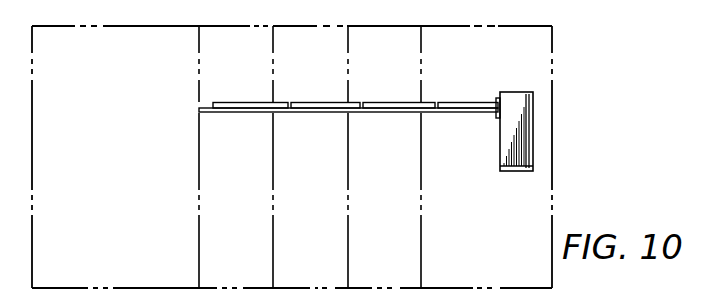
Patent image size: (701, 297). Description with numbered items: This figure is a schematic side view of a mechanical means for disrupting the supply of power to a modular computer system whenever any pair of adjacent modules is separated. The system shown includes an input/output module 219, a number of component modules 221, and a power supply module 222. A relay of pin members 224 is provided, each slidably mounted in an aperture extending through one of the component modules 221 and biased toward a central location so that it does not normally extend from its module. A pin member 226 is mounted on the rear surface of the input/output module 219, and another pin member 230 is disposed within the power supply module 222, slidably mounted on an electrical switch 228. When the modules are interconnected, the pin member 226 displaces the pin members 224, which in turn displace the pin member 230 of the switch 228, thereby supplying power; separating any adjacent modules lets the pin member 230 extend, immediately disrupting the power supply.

The input/output module 219 is at (96, 263).
The component modules 221 is at (217, 264).
The power supply module 222 is at (463, 264).
The pin members 224 is at (372, 102).
The pin member 226 is at (205, 102).
The electrical switch 228 is at (551, 131).
The pin member 230 is at (463, 105).